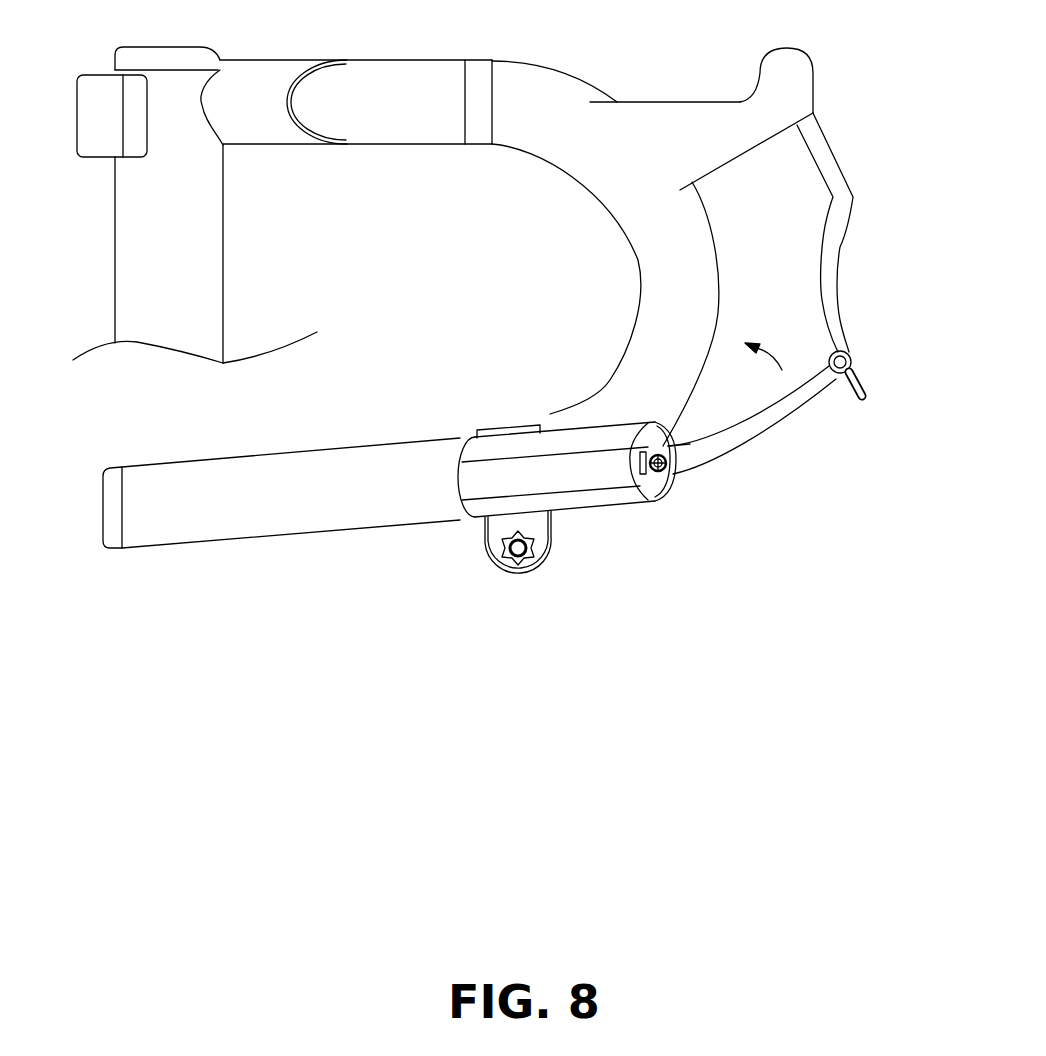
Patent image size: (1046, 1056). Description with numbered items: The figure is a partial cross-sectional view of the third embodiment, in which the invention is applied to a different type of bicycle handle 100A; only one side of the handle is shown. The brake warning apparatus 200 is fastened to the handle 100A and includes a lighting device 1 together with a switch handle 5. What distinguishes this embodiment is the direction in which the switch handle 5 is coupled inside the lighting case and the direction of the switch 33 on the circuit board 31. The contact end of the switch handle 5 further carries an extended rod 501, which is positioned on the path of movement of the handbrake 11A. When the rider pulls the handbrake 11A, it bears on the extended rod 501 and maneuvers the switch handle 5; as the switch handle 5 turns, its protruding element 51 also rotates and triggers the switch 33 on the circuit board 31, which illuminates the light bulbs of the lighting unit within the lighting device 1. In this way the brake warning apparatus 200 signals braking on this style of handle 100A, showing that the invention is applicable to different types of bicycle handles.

The handle 100A is at (250, 502).
The handbrake 11A is at (828, 252).
The extended rod 501 is at (850, 353).
The switch handle 5 is at (753, 433).
The protruding element 51 is at (692, 440).
The switch 33 is at (673, 483).
The circuit board 31 is at (660, 495).
The lighting device 1 is at (585, 548).
The brake warning apparatus 200 is at (835, 617).